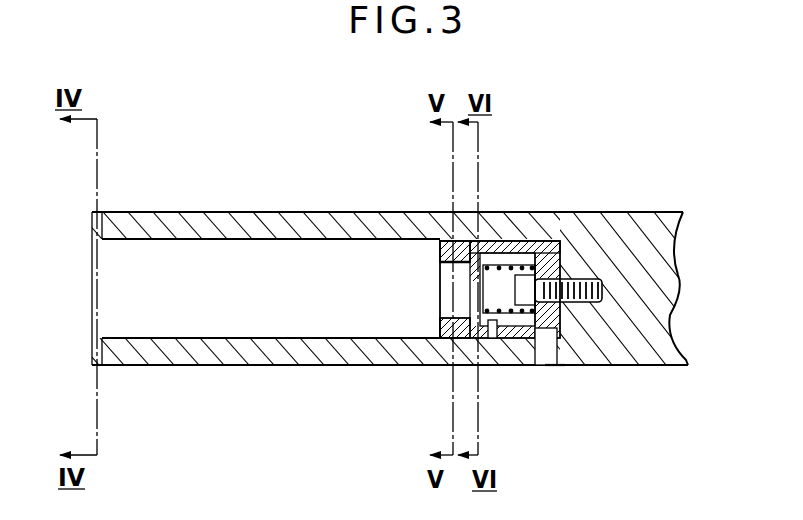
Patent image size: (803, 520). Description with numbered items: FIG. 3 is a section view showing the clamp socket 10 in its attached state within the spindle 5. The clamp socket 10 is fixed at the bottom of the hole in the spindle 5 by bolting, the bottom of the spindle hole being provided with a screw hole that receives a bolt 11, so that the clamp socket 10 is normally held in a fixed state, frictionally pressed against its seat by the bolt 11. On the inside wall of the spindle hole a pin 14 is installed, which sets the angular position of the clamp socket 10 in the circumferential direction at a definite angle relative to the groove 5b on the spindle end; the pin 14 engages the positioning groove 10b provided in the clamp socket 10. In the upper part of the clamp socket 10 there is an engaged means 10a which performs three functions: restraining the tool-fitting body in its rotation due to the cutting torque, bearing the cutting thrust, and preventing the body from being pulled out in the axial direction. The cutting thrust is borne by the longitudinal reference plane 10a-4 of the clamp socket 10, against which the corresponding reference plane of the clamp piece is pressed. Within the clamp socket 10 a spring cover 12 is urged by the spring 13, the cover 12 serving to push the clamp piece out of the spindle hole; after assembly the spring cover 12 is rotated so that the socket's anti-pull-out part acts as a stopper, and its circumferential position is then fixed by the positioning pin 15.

The spindle 5 is at (195, 211).
The groove 5b is at (92, 228).
The clamp socket 10 is at (554, 231).
The engaged means 10a is at (450, 339).
The longitudinal reference plane 10a-4 is at (437, 325).
The positioning groove 10b is at (525, 340).
The bolt 11 is at (585, 282).
The spring cover 12 is at (480, 240).
The spring 13 is at (525, 240).
The pin 14 is at (553, 365).
The positioning pin 15 is at (493, 339).